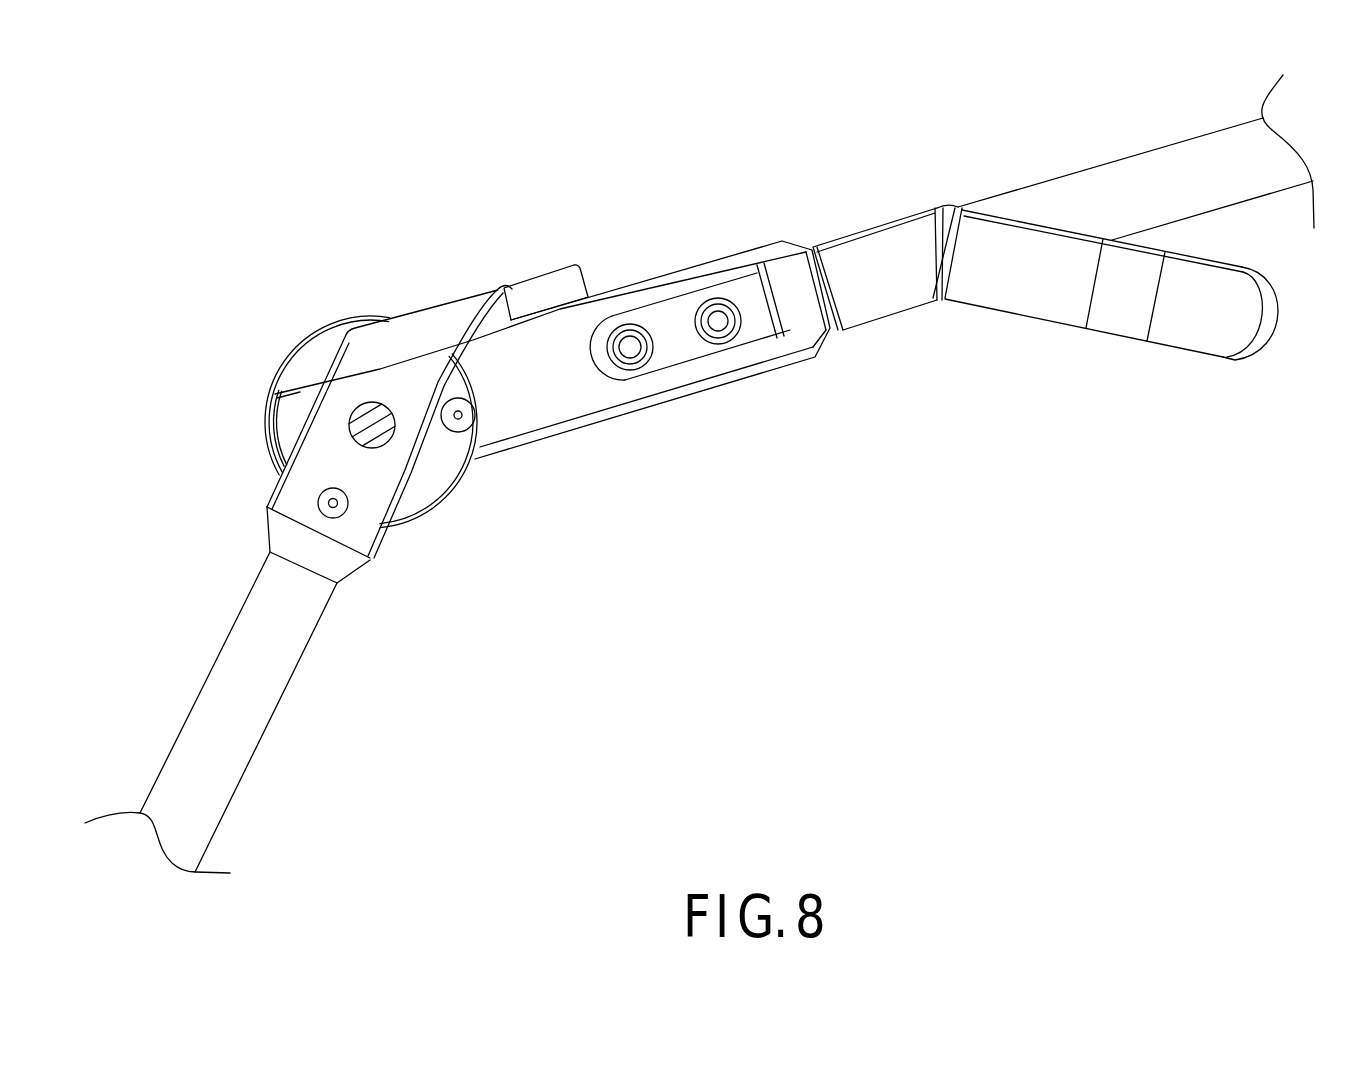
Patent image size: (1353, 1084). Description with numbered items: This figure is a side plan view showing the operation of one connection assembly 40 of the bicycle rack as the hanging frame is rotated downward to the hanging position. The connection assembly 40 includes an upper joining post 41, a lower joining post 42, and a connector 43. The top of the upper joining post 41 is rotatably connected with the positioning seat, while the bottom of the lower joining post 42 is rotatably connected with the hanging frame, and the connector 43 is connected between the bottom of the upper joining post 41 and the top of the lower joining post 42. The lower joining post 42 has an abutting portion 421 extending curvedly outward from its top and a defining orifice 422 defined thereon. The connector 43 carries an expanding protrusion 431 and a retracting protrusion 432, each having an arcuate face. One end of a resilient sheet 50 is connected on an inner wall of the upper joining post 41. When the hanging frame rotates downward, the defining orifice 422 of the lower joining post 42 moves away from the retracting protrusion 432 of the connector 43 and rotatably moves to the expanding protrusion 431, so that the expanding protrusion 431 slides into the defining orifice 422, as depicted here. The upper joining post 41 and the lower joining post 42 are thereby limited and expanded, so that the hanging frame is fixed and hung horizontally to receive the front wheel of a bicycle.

The connection assembly 40 is at (475, 683).
The upper joining post 41 is at (1138, 173).
The lower joining post 42 is at (263, 690).
The connector 43 is at (290, 347).
The abutting portion 421 is at (548, 293).
The defining orifice 422 is at (318, 502).
The expanding protrusion 431 is at (345, 506).
The retracting protrusion 432 is at (462, 416).
The resilient sheet 50 is at (1197, 330).